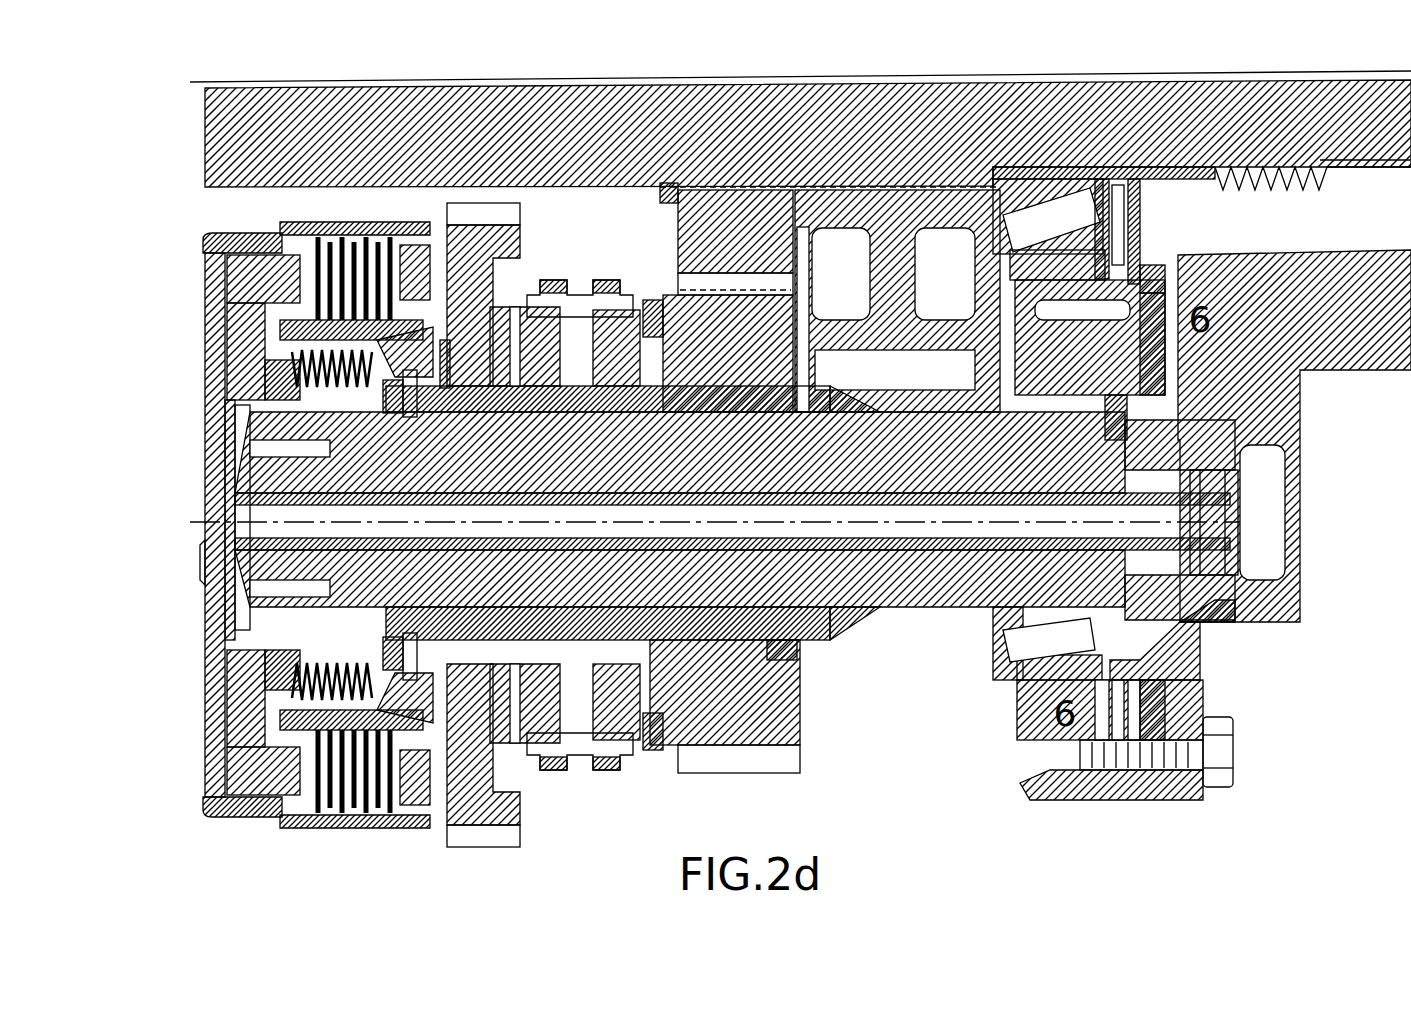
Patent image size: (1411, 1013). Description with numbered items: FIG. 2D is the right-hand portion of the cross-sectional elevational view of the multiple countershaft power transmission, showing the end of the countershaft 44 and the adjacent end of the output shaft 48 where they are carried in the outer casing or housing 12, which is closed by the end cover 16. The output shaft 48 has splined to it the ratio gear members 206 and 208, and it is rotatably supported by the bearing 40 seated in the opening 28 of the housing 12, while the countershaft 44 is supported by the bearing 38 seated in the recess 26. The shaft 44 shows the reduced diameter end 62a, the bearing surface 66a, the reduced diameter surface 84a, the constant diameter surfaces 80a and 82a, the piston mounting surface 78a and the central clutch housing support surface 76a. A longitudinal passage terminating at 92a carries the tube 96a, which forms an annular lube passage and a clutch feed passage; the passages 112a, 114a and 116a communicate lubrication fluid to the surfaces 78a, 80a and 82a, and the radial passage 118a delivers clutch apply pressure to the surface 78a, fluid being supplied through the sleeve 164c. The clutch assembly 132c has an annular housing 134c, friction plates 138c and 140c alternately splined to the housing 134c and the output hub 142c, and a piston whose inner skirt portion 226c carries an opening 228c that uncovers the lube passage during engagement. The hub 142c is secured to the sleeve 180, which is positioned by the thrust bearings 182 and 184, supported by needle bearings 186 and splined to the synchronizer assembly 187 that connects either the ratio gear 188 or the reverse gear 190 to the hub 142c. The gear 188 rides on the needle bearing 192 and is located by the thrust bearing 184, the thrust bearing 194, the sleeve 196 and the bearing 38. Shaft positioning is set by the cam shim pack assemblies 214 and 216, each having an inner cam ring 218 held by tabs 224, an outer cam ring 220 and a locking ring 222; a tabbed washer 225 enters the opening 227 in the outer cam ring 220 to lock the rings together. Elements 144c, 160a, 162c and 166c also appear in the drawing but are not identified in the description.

The output shaft 48 is at (960, 102).
The ratio gear member 206 is at (740, 200).
The ratio gear member 208 is at (892, 205).
The constant diameter surface 82a is at (800, 300).
The bearing 40 is at (1058, 202).
The recess or opening 28 is at (1002, 232).
The radially extending tabs 224 is at (1060, 260).
The cam shim pack assembly 214 is at (1152, 215).
The outer cam ring 220 is at (1142, 207).
The inner cam ring 218 is at (1130, 240).
The tabbed washer 225 is at (1134, 205).
The locking ring 222 is at (1152, 268).
The outer casing or housing 12 is at (1158, 286).
The end cover 16 is at (1292, 605).
The bearing surface 66a is at (1035, 445).
The shaft bore 160a is at (1108, 470).
The shaft end flange 166c is at (1222, 442).
The nut 162c is at (1242, 500).
The sleeve 164c is at (1222, 568).
The reduced diameter end 62a is at (1122, 440).
The reduced diameter surface 84a is at (862, 408).
The tube 96a is at (845, 628).
The countershaft 44 is at (205, 590).
The sleeve 196 is at (930, 615).
The clutch assembly 132c is at (245, 828).
The annular housing 134c is at (237, 245).
The piston mounting surface 78a is at (218, 380).
The central clutch housing support surface 76a is at (218, 390).
The radial passage 118a is at (222, 436).
The opening 228c is at (240, 450).
The passage 112a is at (238, 480).
The passage termination 92a is at (212, 560).
The thrust bearing 182 is at (240, 612).
The inner skirt portion 226c is at (240, 662).
The piston 144c is at (270, 690).
The friction plates 140c is at (262, 742).
The friction plates 138c is at (345, 812).
The output hub 142c is at (418, 832).
The constant diameter surface 80a is at (405, 410).
The reverse gear 190 is at (490, 842).
The passage 114a is at (512, 360).
The passage 116a is at (690, 360).
The needle bearings 186 is at (470, 630).
The sleeve 180 is at (548, 630).
The thrust bearing 184 is at (560, 772).
The synchronizer assembly 187 is at (612, 775).
The needle bearing 192 is at (772, 682).
The ratio gear 188 is at (738, 756).
The thrust bearing 194 is at (800, 656).
The bearing 38 is at (1000, 652).
The recess 26 is at (1030, 660).
The opening 227 is at (1210, 618).
The cam shim pack assembly 216 is at (1232, 726).